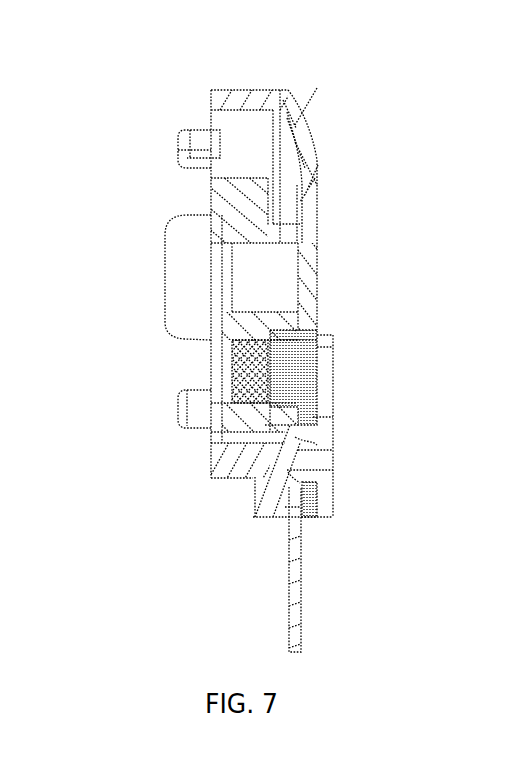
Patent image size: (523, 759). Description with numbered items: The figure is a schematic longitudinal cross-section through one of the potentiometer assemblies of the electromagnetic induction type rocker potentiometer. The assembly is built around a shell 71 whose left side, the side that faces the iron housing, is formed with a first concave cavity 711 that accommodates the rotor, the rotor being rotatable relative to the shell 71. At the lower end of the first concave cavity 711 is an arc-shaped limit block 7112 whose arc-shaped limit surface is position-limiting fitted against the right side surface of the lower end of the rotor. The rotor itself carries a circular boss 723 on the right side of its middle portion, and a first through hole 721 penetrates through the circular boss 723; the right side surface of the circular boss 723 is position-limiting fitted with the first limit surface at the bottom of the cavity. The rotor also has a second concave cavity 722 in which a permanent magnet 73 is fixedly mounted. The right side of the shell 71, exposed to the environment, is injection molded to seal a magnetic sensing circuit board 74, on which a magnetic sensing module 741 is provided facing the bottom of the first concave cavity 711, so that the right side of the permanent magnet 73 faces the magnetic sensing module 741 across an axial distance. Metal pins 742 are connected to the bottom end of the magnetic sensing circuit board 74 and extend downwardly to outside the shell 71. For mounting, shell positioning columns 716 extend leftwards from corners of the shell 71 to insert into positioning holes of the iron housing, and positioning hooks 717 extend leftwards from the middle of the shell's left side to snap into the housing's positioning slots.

The shell 71 is at (314, 178).
The first concave cavity 711 is at (263, 155).
The arc-shaped limit block 7112 is at (327, 433).
The shell positioning column 716 is at (190, 127).
The positioning hook 717 is at (195, 255).
The first through hole 721 is at (250, 297).
The second concave cavity 722 is at (268, 437).
The circular boss 723 is at (282, 146).
The permanent magnet 73 is at (232, 343).
The magnetic sensing circuit board 74 is at (320, 407).
The magnetic sensing module 741 is at (318, 348).
The metal pins 742 is at (300, 597).